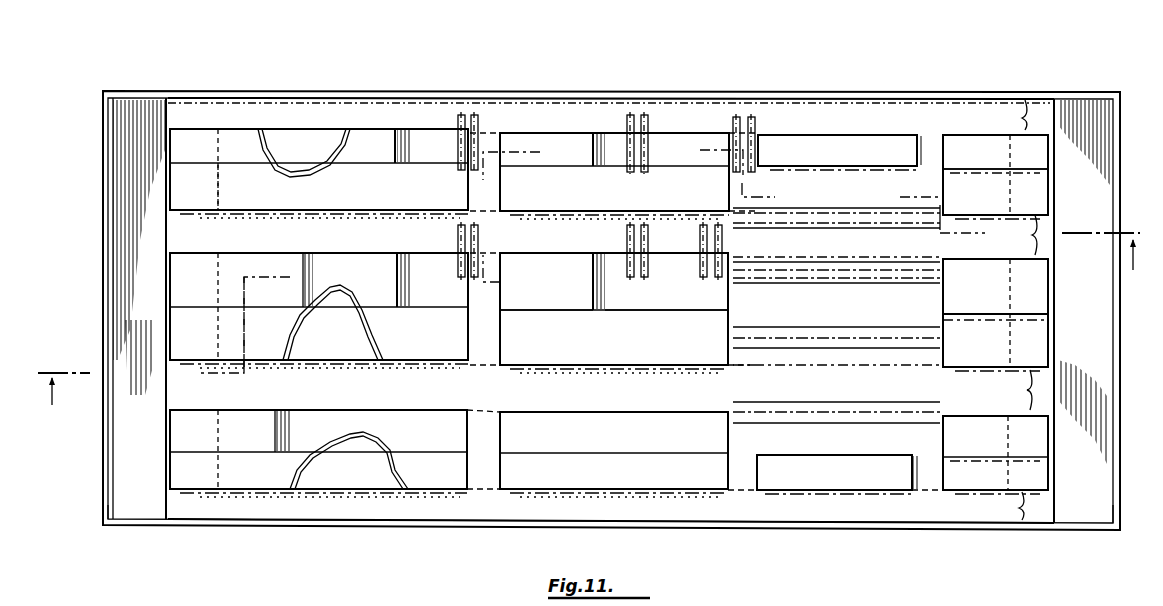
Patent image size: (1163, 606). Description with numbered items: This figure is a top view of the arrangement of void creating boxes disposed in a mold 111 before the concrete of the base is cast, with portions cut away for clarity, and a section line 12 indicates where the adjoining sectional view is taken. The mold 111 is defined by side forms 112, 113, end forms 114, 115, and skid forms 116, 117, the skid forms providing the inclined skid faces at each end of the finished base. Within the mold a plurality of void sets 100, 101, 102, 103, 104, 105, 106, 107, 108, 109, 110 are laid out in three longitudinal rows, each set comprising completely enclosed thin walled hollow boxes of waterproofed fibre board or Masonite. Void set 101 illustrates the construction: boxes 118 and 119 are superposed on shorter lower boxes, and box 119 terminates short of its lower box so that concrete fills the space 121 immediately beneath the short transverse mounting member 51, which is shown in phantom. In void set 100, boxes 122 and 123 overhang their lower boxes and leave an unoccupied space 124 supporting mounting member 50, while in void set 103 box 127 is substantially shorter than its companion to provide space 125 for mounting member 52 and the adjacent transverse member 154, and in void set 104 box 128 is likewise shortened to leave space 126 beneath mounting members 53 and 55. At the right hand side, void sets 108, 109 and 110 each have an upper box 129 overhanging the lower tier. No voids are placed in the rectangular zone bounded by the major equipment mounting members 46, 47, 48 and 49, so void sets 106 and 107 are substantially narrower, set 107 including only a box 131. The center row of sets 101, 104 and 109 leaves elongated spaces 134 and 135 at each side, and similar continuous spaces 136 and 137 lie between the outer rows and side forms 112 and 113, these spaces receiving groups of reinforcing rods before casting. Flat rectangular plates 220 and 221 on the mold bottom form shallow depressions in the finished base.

The section line / shallow depression 12 is at (587, 337).
The major equipment mounting member 46 is at (848, 205).
The major equipment mounting member 47 is at (806, 262).
The major equipment mounting member 48 is at (812, 328).
The major equipment mounting member 49 is at (820, 405).
The shorter major equipment mounting member 50 is at (477, 118).
The short transverse major mounting member 51 is at (485, 245).
The major mounting member 52 is at (641, 122).
The major mounting member 53 is at (648, 225).
The major mounting member 55 is at (704, 225).
The void set 100 is at (178, 212).
The void set 101 is at (182, 250).
The void set 102 is at (193, 490).
The void set 103 is at (578, 131).
The void set 104 is at (573, 250).
The void set 105 is at (560, 492).
The void set 106 is at (835, 490).
The void set 107 is at (858, 133).
The void set 108 is at (977, 133).
The void set 109 is at (1050, 320).
The void set 110 is at (962, 492).
The mold 111 is at (707, 527).
The side form 112 is at (330, 525).
The side form 113 is at (387, 97).
The end form 114 is at (108, 142).
The end form 115 is at (1122, 143).
The skid form 116 is at (122, 510).
The skid form 117 is at (1090, 515).
The void creating box 118 is at (258, 352).
The void creating box 119 is at (272, 258).
The space 121 is at (424, 297).
The void creating box 122 is at (243, 138).
The void creating box 123 is at (233, 200).
The unoccupied space 124 is at (432, 143).
The unoccupied space 125 is at (703, 146).
The unoccupied space 126 is at (674, 290).
The void creating box 127 is at (548, 135).
The void creating box 128 is at (565, 300).
The void creating box 129 is at (1040, 196).
The void creating box 131 is at (893, 148).
The elongated space 134 is at (1038, 390).
The elongated space 135 is at (1045, 235).
The elongated space 136 is at (1035, 503).
The elongated space 137 is at (1025, 100).
The coupling 154 is at (755, 131).
The depression forming plate 220 is at (478, 493).
The depression forming plate 221 is at (487, 363).